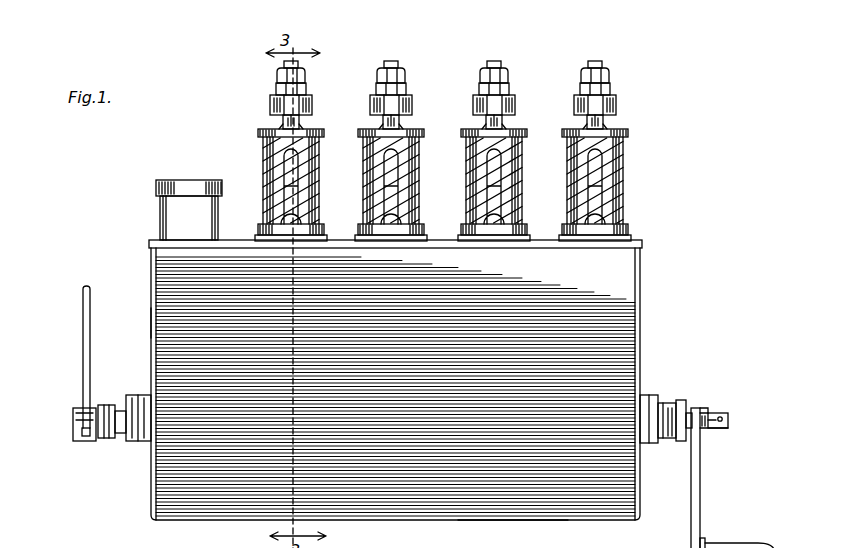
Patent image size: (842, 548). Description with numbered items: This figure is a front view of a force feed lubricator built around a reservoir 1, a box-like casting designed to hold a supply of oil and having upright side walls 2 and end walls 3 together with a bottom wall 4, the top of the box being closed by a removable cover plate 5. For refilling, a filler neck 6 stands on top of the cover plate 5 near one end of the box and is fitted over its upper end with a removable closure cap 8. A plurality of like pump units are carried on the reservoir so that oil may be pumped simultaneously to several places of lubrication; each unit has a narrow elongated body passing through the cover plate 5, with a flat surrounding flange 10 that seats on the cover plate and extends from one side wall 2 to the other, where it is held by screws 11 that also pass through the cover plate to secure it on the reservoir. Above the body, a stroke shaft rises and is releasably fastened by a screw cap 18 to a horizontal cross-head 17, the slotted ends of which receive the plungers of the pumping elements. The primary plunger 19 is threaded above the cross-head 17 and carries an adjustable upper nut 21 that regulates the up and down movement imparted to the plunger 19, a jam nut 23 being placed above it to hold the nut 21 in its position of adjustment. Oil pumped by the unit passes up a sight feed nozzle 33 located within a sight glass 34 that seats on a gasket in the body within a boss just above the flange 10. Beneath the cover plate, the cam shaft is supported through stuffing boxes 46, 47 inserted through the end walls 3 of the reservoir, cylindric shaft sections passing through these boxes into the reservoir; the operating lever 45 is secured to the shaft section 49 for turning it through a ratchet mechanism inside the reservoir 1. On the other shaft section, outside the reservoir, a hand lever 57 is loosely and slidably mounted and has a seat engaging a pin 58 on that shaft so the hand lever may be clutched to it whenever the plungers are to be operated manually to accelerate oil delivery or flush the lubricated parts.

The reservoir 1 is at (138, 494).
The side wall 2 is at (395, 386).
The end wall 3 is at (142, 313).
The bottom wall 4 is at (508, 512).
The cover plate 5 is at (233, 237).
The filler neck 6 is at (160, 206).
The closure cap 8 is at (181, 177).
The flange 10 is at (257, 228).
The screw 11 is at (262, 212).
The cross-head 17 is at (305, 96).
The screw cap 18 is at (719, 420).
The plunger 19 is at (367, 60).
The upper nut 21 is at (293, 81).
The jam nut 23 is at (297, 68).
The sight feed nozzle 33 is at (387, 192).
The sight glass 34 is at (355, 160).
The operating lever 45 is at (78, 312).
The stuffing box 46 is at (123, 429).
The stuffing box 47 is at (658, 384).
The shaft section 49 is at (65, 418).
The hand lever 57 is at (688, 493).
The pin 58 is at (712, 405).